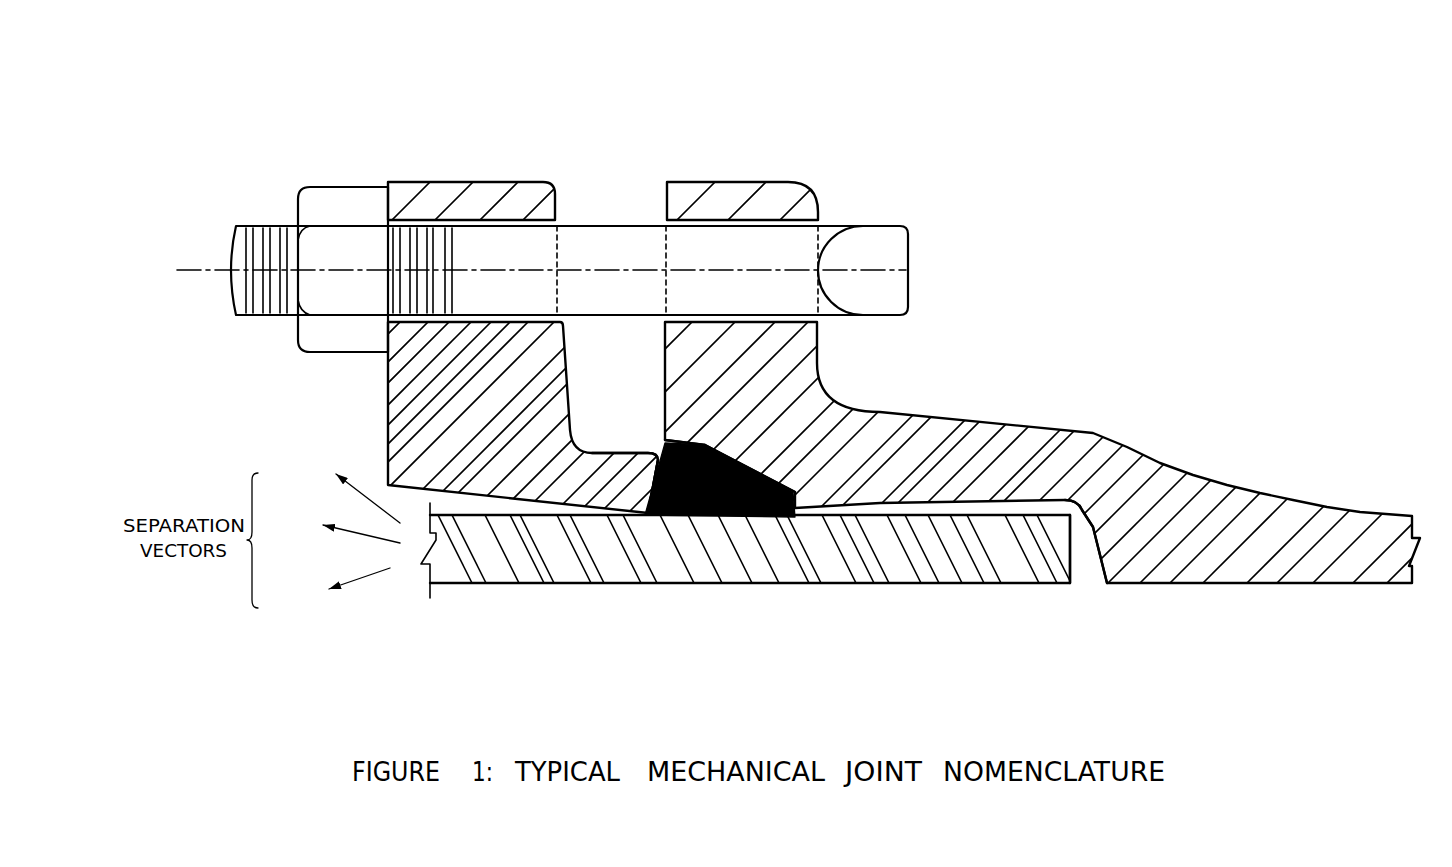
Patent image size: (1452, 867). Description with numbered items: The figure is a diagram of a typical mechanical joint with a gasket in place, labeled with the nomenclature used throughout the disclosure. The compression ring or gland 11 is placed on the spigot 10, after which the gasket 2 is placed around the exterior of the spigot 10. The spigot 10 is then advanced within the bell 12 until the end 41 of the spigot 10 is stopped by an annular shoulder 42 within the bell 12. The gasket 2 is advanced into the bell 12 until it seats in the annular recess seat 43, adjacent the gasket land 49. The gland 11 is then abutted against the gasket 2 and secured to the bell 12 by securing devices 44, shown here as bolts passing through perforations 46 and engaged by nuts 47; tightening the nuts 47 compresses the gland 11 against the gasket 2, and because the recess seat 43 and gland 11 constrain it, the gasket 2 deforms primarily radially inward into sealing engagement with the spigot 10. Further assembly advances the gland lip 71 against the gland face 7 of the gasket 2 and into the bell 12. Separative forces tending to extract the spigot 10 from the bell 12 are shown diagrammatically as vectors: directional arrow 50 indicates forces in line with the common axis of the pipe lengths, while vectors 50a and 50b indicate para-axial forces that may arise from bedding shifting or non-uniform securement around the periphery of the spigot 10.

The gasket 2 is at (738, 517).
The gland face 7 is at (652, 483).
The spigot 10 is at (822, 584).
The gland 11 is at (425, 178).
The bell 12 is at (713, 178).
The end of spigot 41 is at (1071, 560).
The annular shoulder 42 is at (1092, 528).
The annular recess seat 43 is at (706, 444).
The securing devices 44 is at (913, 257).
The perforations 46 is at (565, 217).
The nuts 47 is at (297, 200).
The gasket land 49 is at (669, 437).
The directional arrow 50 is at (336, 527).
The vector 50a is at (336, 493).
The vector 50b is at (329, 588).
The gland lip 71 is at (642, 449).